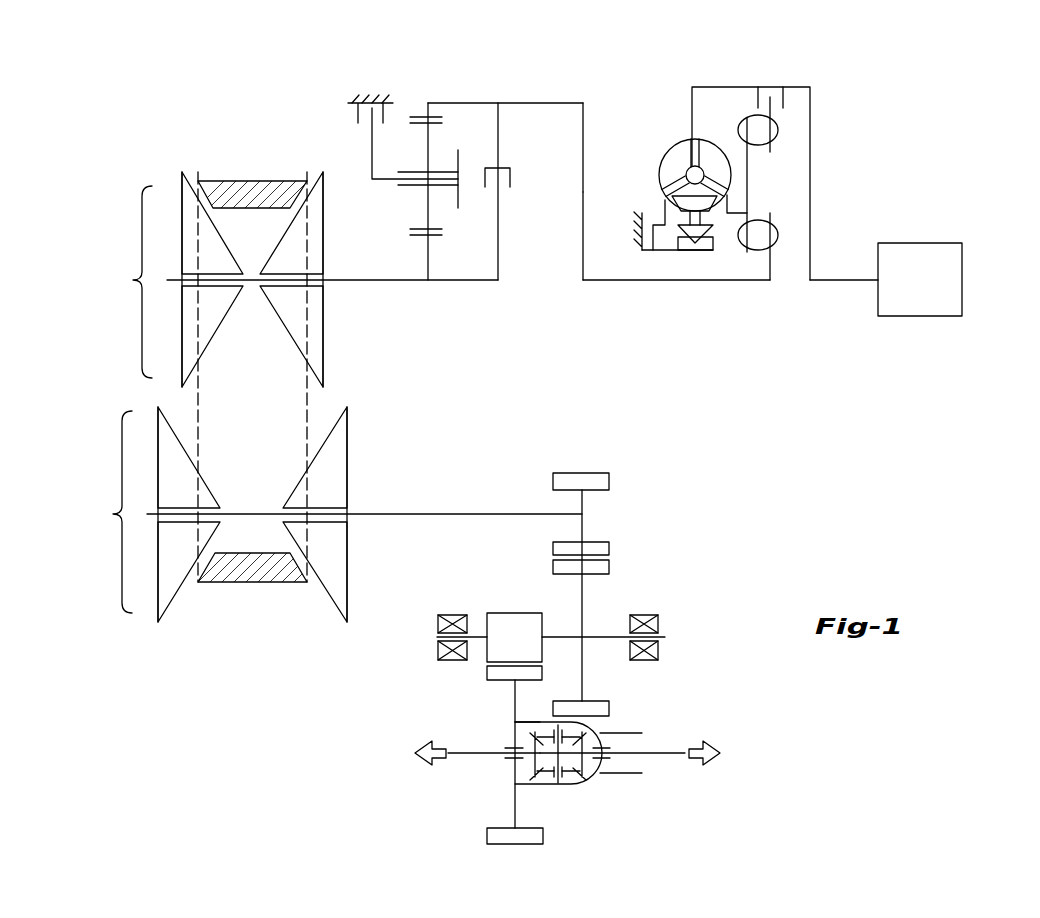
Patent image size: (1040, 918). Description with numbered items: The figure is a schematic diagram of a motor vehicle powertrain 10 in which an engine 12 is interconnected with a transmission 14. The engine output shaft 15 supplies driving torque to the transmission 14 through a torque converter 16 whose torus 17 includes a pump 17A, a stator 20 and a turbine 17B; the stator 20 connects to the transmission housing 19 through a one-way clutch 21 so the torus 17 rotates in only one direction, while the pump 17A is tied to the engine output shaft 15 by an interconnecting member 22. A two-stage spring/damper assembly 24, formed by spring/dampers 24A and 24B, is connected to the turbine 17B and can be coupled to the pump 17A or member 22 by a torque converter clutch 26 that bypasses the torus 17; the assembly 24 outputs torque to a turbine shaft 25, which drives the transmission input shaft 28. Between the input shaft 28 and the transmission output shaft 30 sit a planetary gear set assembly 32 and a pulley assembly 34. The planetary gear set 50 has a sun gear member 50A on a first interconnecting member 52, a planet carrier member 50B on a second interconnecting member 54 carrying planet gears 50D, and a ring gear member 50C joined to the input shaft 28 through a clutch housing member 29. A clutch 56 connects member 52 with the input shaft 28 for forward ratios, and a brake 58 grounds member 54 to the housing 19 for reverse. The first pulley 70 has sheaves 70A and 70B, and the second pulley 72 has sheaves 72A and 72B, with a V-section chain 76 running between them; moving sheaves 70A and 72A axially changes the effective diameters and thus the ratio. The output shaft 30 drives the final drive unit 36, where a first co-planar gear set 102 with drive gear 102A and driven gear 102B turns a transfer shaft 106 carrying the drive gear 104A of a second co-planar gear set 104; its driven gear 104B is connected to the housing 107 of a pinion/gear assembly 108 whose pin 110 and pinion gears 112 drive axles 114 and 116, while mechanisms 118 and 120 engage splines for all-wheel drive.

The powertrain 10 is at (940, 86).
The engine 12 is at (908, 294).
The transmission 14 is at (601, 80).
The engine output shaft 15 is at (829, 284).
The torque converter 16 is at (798, 202).
The torus 17 is at (692, 208).
The pump 17A is at (680, 148).
The turbine 17B is at (732, 167).
The transmission housing 19 is at (356, 96).
The stator 20 is at (682, 208).
The one-way clutch 21 is at (720, 232).
The interconnecting member 22 is at (812, 115).
The spring/damper assembly 24 is at (805, 228).
The spring/damper 24A is at (779, 132).
The spring/damper 24B is at (780, 238).
The turbine shaft 25 is at (768, 262).
The torque converter clutch 26 is at (756, 100).
The transmission input shaft 28 is at (596, 282).
The clutch housing member 29 is at (540, 103).
The transmission output shaft 30 is at (449, 514).
The planetary gear set assembly 32 is at (498, 100).
The pulley assembly 34 is at (302, 334).
The final drive unit 36 is at (567, 643).
The planetary gear set 50 is at (469, 191).
The sun gear member 50A is at (426, 258).
The planet carrier member 50B is at (459, 196).
The ring gear member 50C is at (427, 108).
The planet gears 50D is at (430, 148).
The first interconnecting member 52 is at (471, 282).
The second interconnecting member 54 is at (370, 149).
The clutch 56 is at (514, 180).
The brake 58 is at (356, 116).
The first pulley 70 is at (302, 356).
The first truncated conical sheave 70A is at (188, 176).
The second truncated conical sheave 70B is at (318, 176).
The second pulley 72 is at (219, 547).
The first truncated conical sheave 72A is at (167, 608).
The second truncated conical sheave 72B is at (337, 608).
The chain 76 is at (258, 584).
The first co-planar gear set 102 is at (615, 562).
The drive gear 102A is at (610, 480).
The driven gear 102B is at (610, 566).
The second co-planar gear set 104 is at (524, 715).
The drive gear 104A is at (514, 612).
The driven gear 104B is at (512, 702).
The transfer shaft 106 is at (608, 636).
The housing 107 is at (524, 723).
The pinion/gear assembly 108 is at (538, 781).
The pin 110 is at (565, 758).
The pinion gears 112 is at (545, 776).
The axle 114 is at (674, 751).
The axle 116 is at (468, 758).
The mechanism 118 is at (640, 733).
The mechanism 120 is at (644, 773).